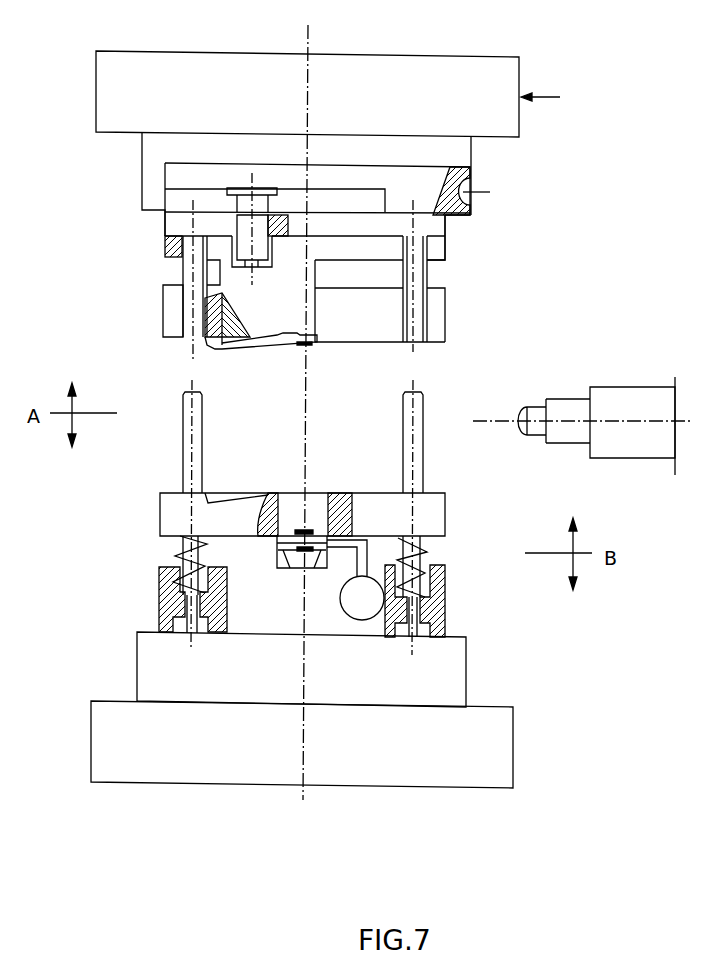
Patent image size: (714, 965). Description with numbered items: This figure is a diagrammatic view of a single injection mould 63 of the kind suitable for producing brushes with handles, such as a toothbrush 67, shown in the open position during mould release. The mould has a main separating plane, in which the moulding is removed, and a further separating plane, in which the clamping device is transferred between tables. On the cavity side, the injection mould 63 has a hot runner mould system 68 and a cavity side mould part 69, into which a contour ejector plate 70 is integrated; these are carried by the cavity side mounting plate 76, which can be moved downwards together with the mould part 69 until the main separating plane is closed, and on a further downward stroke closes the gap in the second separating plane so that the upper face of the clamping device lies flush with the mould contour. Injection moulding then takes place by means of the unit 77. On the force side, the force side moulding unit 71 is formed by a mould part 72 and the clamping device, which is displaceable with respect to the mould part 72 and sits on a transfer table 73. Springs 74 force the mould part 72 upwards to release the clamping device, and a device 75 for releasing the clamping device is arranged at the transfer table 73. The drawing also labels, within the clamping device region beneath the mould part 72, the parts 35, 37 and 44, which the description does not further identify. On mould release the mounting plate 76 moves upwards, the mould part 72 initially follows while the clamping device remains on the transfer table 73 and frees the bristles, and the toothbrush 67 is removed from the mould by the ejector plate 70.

The stripper block 35 is at (278, 548).
The die insert 37 is at (310, 570).
The punch pin 44 is at (306, 529).
The injection mould 63 is at (558, 99).
The toothbrush 67 is at (257, 347).
The hot runner mould system 68 is at (471, 173).
The cavity side mould part 69 is at (156, 313).
The contour ejector plate 70 is at (440, 243).
The force side moulding unit 71 is at (156, 513).
The mould part 72 is at (437, 512).
The transfer table 73 is at (446, 607).
The springs 74 is at (175, 553).
The device for releasing the clamping device 75 is at (365, 609).
The cavity side mounting plate 76 is at (425, 80).
The injection moulding unit 77 is at (630, 400).